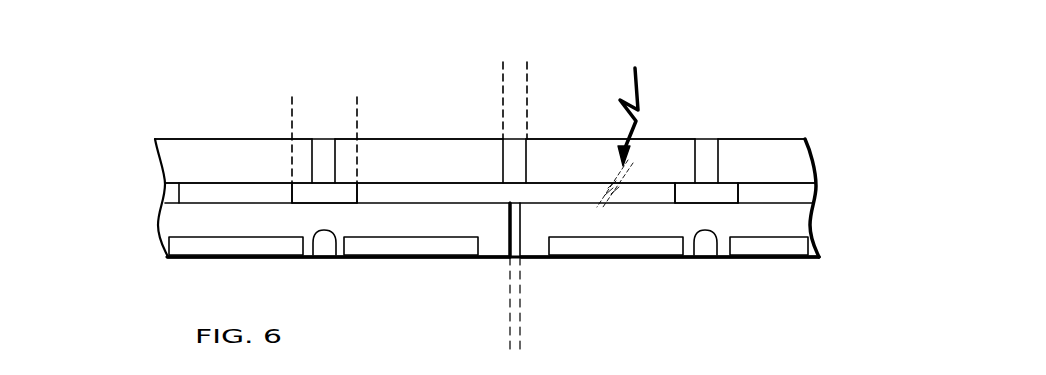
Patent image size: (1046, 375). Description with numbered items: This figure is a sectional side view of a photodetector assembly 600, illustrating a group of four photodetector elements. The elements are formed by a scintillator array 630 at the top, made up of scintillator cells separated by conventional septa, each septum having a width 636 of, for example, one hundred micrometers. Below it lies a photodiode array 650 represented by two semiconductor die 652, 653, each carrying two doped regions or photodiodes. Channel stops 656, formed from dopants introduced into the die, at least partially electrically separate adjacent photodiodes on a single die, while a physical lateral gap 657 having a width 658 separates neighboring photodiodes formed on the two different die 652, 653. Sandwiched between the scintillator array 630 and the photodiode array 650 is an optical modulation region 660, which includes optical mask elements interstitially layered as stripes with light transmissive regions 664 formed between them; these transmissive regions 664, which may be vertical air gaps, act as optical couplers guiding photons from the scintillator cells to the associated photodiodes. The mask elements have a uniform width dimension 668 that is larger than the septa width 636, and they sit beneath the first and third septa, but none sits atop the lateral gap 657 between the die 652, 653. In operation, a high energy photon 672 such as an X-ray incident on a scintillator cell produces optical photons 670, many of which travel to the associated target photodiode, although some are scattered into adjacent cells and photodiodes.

The photodetector assembly 600 is at (701, 73).
The scintillator array 630 is at (138, 152).
The width 636 is at (580, 85).
The photodiode array 650 is at (136, 235).
The semiconductor die 652 is at (225, 232).
The semiconductor die 653 is at (778, 232).
The channel stop 656 is at (322, 257).
The lateral gap 657 is at (508, 228).
The width 658 is at (575, 305).
The optical modulation region 660 is at (136, 198).
The optically transmissive region 664 is at (251, 182).
The width dimension 668 is at (383, 108).
The optical photon 670 is at (600, 208).
The high energy photon 672 is at (640, 91).